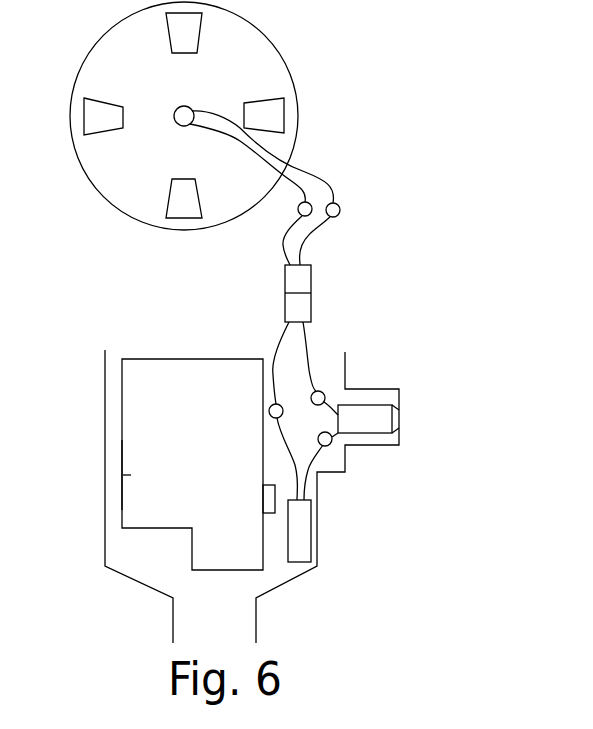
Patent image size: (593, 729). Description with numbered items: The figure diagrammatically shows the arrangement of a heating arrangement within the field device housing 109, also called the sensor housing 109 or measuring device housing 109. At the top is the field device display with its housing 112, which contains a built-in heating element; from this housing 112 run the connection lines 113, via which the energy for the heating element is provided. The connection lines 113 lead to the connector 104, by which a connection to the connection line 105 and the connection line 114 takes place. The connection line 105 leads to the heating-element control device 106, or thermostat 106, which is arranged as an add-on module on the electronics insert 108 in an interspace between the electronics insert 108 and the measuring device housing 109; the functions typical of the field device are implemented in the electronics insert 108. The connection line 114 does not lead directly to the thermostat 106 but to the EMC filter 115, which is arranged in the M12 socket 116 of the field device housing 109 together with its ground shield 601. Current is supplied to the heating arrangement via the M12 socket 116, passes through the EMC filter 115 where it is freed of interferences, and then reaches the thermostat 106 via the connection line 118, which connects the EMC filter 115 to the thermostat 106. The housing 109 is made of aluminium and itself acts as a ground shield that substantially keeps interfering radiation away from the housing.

The housing 112 is at (103, 170).
The connection lines 113 is at (322, 228).
The connector 104 is at (262, 288).
The connection line 114 is at (302, 350).
The connection line 105 is at (272, 340).
The electronics insert 108 is at (112, 475).
The connection line 118 is at (301, 462).
The M12 socket 116 is at (400, 394).
The EMC filter 115 is at (377, 437).
The ground shield 601 is at (365, 427).
The heating-element control device 106 is at (309, 540).
The field device housing 109 is at (103, 567).